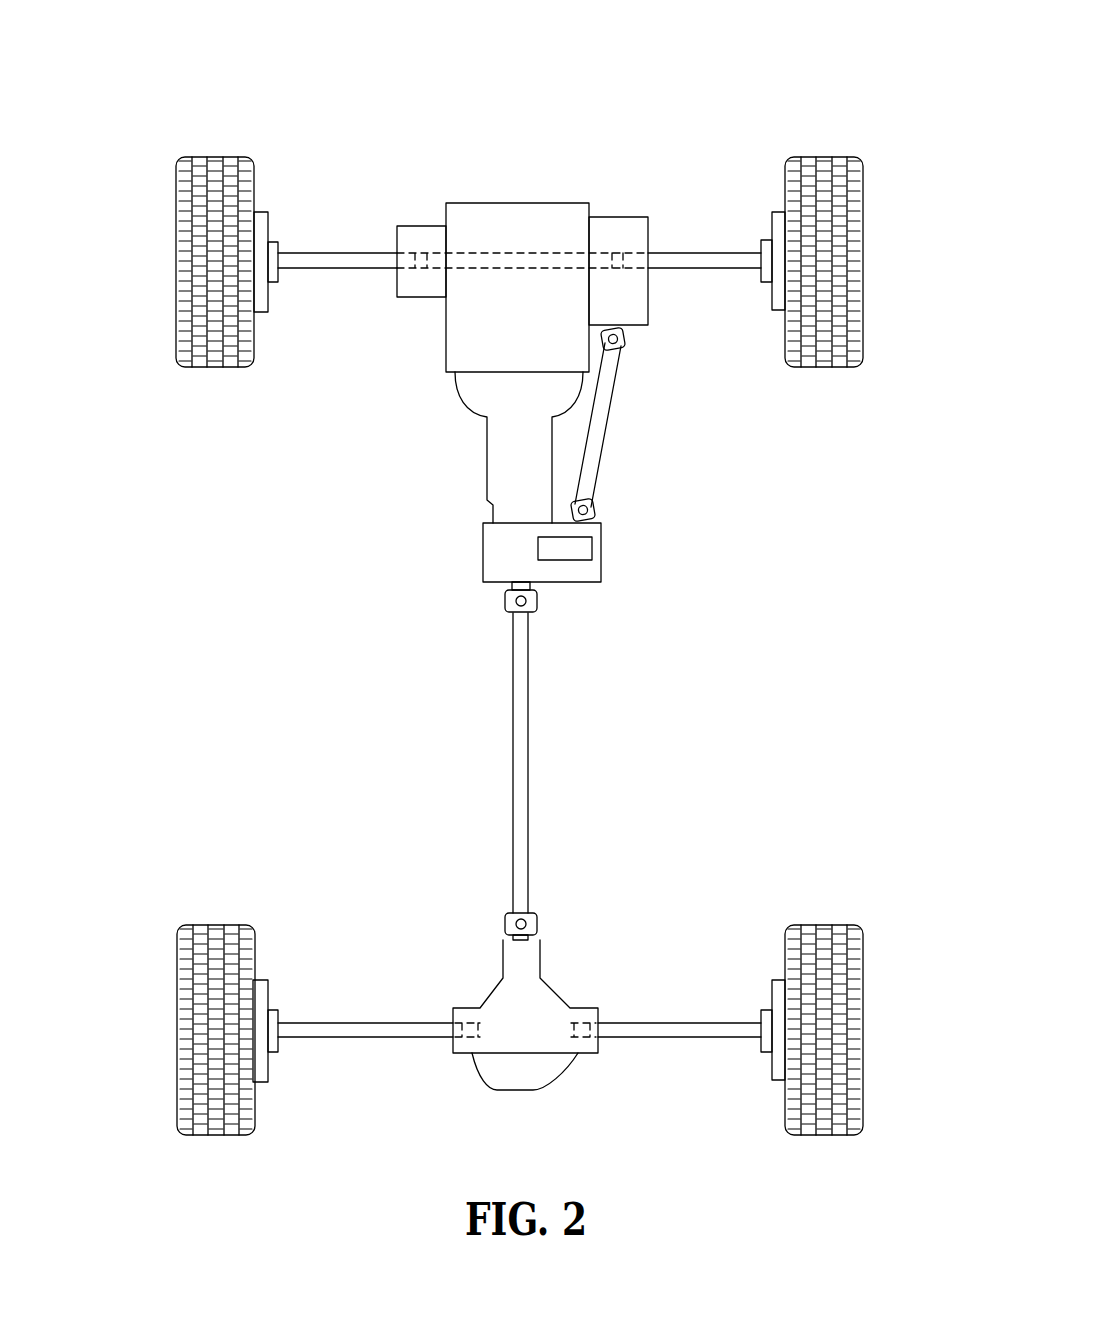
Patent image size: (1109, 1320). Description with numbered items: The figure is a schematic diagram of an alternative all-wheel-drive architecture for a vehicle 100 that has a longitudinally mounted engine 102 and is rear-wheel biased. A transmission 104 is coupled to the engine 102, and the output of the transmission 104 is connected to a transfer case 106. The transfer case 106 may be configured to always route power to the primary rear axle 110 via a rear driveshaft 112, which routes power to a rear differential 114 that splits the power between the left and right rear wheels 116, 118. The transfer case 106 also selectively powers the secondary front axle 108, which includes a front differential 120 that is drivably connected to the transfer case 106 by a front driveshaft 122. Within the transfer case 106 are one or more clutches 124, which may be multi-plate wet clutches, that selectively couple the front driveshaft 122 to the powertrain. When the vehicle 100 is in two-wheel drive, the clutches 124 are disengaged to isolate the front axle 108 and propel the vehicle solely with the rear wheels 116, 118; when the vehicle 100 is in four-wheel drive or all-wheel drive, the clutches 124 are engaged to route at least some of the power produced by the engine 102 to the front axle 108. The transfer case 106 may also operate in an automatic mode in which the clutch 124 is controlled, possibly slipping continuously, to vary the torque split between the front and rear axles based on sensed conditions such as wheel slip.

The vehicle 100 is at (824, 60).
The engine 102 is at (518, 203).
The transmission 104 is at (487, 453).
The transfer case 106 is at (605, 545).
The front axle 108 is at (907, 207).
The rear axle 110 is at (907, 964).
The rear driveshaft 112 is at (530, 762).
The rear differential 114 is at (552, 990).
The rear wheel 116 is at (862, 1040).
The rear wheel 118 is at (177, 1033).
The front differential 120 is at (618, 217).
The front driveshaft 122 is at (612, 425).
The clutch 124 is at (563, 560).